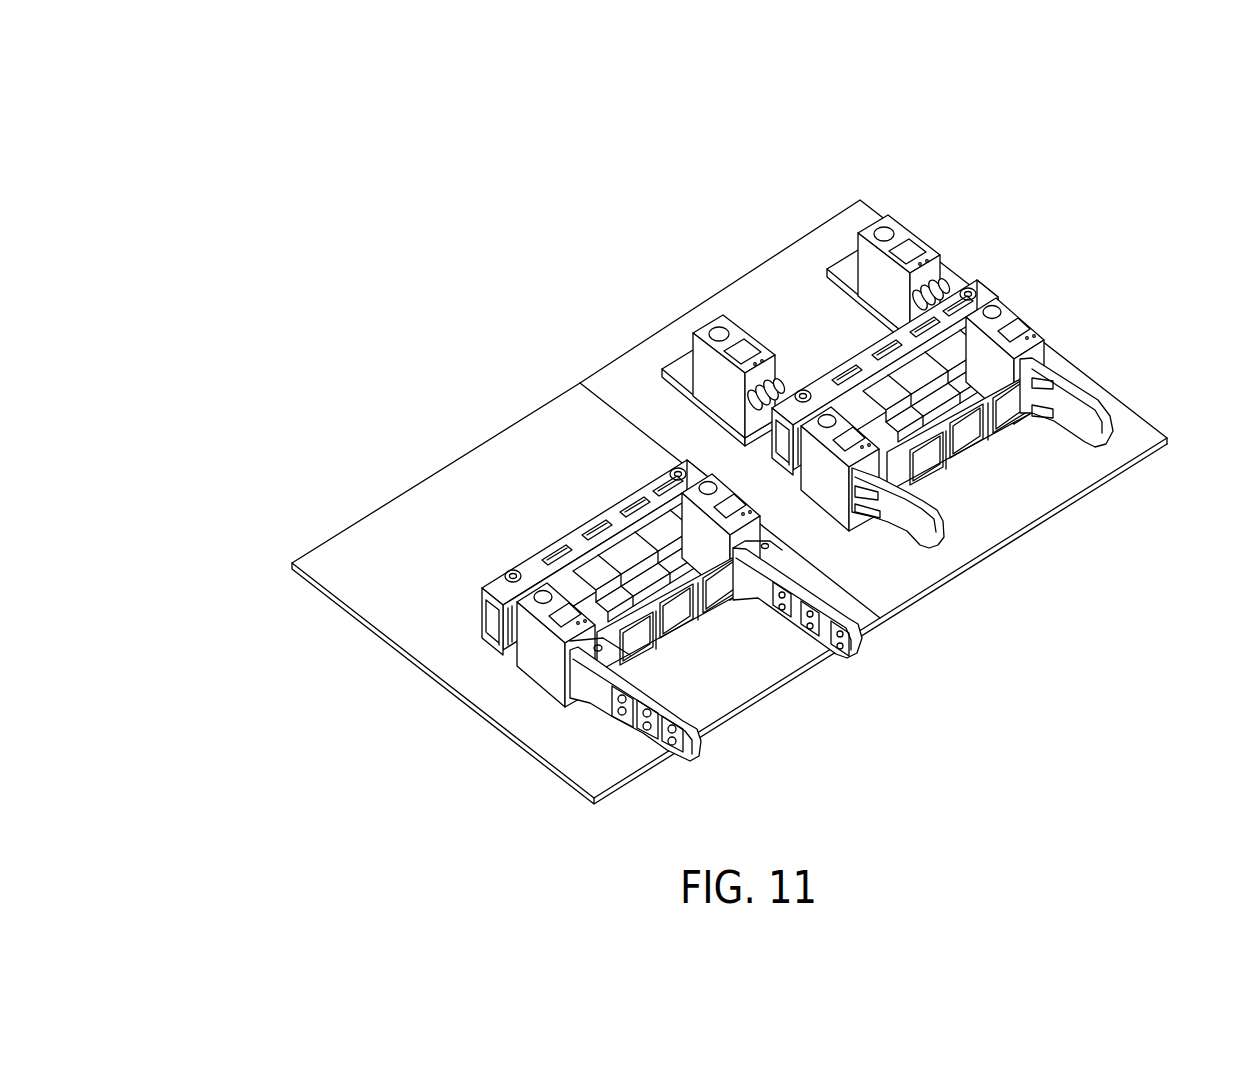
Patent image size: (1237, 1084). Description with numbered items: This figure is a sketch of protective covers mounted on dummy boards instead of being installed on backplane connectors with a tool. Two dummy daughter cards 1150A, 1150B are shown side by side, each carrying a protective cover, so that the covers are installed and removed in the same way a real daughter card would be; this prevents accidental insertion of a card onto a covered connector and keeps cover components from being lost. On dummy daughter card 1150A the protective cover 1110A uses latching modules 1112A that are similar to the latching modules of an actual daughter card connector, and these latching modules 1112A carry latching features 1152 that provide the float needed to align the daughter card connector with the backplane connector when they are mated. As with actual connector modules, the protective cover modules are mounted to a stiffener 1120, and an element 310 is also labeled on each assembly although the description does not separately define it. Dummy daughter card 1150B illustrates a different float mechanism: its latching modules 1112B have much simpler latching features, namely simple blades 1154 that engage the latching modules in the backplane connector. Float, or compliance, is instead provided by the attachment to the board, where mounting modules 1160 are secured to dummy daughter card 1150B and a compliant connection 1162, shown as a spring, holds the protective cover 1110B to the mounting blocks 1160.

The connector assembly 1110A is at (518, 629).
The protective cover 1110B is at (1012, 426).
The latching module 1112A is at (540, 652).
The latching module 1112B is at (1020, 322).
The stiffener 1120 is at (878, 328).
The dummy daughter card 1150A is at (333, 583).
The dummy daughter card 1150B is at (862, 197).
The latching feature 1152 is at (612, 705).
The blade 1154 is at (933, 545).
The mounting module 1160 is at (900, 218).
The compliant connection 1162 is at (935, 288).
The retention arm 310 is at (675, 678).